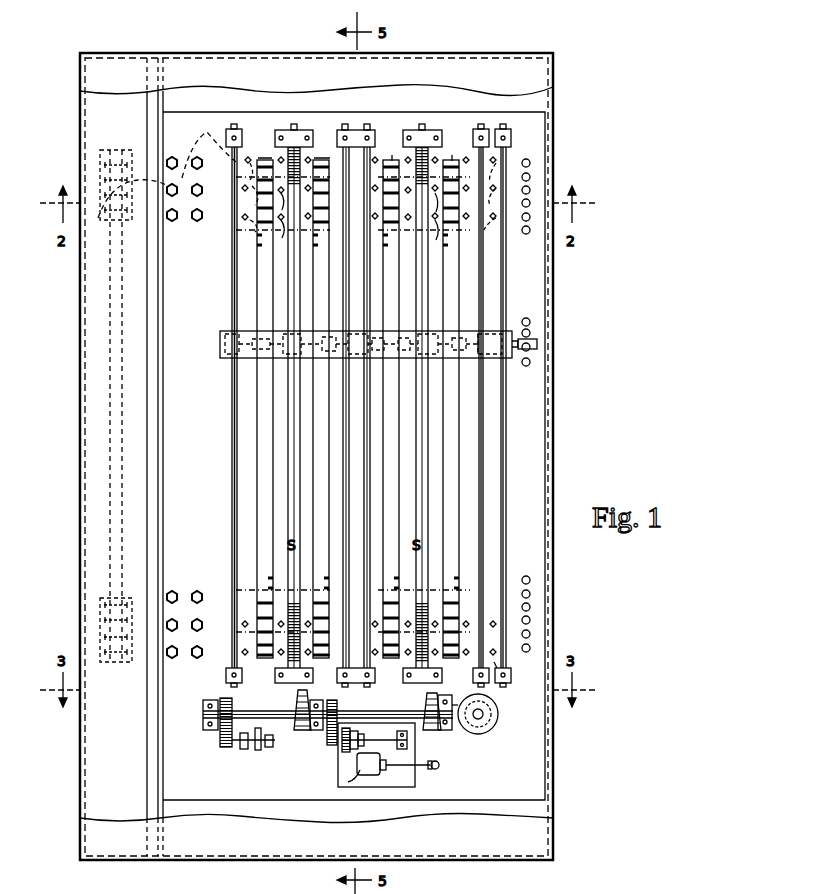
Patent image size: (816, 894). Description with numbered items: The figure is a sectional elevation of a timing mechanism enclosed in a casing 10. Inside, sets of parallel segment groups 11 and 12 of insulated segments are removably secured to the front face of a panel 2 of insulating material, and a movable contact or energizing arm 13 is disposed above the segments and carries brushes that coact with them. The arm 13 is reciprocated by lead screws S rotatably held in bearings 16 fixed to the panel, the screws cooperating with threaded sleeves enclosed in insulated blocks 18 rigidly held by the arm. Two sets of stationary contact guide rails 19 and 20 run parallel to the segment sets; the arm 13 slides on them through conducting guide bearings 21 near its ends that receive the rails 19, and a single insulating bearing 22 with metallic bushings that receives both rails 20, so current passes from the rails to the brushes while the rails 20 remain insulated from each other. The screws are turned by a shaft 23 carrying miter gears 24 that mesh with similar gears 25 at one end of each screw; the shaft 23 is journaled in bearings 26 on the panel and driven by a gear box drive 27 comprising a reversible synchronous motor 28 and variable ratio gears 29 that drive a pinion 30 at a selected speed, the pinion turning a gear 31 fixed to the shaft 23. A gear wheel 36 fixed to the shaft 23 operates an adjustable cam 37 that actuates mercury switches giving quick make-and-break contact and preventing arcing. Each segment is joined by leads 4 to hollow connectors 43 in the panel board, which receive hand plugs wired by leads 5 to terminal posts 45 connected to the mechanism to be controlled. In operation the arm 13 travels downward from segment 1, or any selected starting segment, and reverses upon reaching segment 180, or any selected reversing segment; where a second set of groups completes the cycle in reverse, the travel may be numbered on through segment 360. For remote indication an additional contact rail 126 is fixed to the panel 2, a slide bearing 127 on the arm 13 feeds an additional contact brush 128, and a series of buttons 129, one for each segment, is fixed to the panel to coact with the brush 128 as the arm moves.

The segment 1 is at (422, 153).
The panel 2 is at (146, 406).
The leads 4 is at (355, 219).
The leads 5 is at (167, 166).
The casing 10 is at (80, 466).
The segment group 11 is at (359, 409).
The segment group 12 is at (357, 409).
The movable contact arm 13 is at (476, 333).
The bearings 16 is at (296, 128).
The insulated blocks 18 is at (261, 663).
The segment 180 is at (389, 663).
The contact guide rails 19 is at (232, 466).
The contact guide rails 20 is at (346, 562).
The guide bearings 21 is at (226, 358).
The bearing 22 is at (355, 358).
The shaft 23 is at (376, 711).
The miter gears 24 is at (427, 730).
The miter gears 25 is at (438, 696).
The bearings 26 is at (204, 725).
The gear box drive 27 is at (410, 780).
The reversible synchronous motor 28 is at (350, 784).
The variable ratio gears 29 is at (352, 756).
The pinion 30 is at (320, 738).
The gear 31 is at (333, 690).
The gear wheel 36 is at (232, 702).
The adjustable cam 37 is at (234, 746).
The hollow connectors 43 is at (272, 150).
The terminal posts 45 is at (196, 165).
The contact rail 126 is at (506, 684).
The slide bearing 127 is at (512, 331).
The contact brush 128 is at (537, 340).
The buttons 129 is at (530, 163).
The segment 360 is at (293, 154).